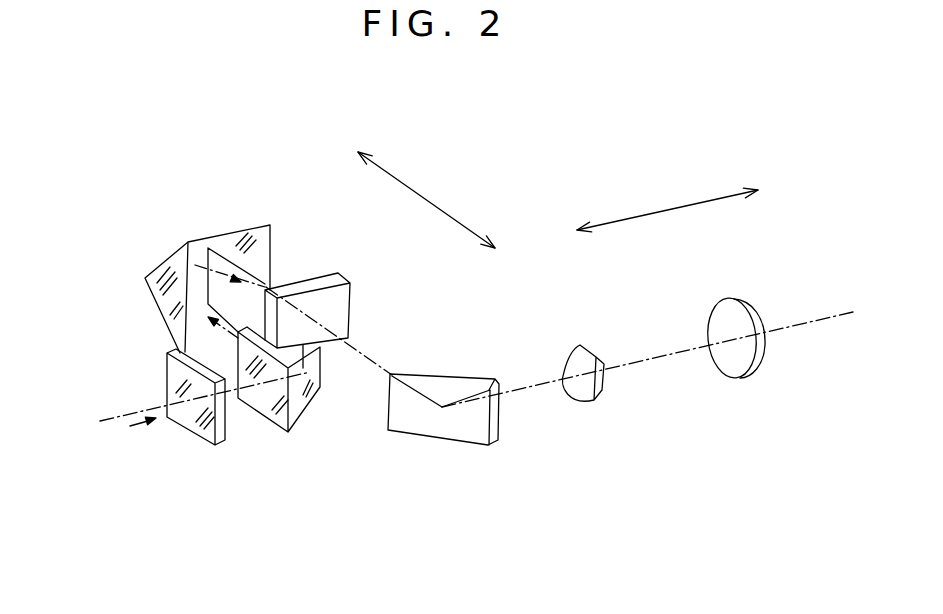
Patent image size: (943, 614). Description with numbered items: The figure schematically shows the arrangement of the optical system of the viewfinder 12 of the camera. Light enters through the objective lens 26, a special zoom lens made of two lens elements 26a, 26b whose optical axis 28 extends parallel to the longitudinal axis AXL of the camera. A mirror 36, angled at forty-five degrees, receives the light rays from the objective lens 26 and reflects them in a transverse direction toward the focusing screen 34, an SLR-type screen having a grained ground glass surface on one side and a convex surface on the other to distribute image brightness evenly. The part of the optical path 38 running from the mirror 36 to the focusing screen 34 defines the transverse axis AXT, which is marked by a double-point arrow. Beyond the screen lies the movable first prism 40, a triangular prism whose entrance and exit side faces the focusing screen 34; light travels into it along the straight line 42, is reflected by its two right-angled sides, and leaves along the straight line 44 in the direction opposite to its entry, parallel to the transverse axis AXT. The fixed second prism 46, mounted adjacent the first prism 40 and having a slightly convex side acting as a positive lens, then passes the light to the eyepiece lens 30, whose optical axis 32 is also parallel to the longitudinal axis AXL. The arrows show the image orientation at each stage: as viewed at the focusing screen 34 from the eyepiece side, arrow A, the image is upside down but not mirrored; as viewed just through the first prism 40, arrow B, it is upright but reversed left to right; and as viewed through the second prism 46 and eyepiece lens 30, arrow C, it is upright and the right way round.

The viewfinder 12 is at (322, 521).
The objective lens 26 is at (681, 370).
The lens element 26a is at (745, 378).
The lens element 26b is at (598, 401).
The optical axis 28 is at (828, 314).
The eyepiece lens 30 is at (198, 434).
The optical axis 32 is at (116, 417).
The focusing screen 34 is at (320, 282).
The mirror 36 is at (468, 433).
The optical path 38 is at (375, 358).
The first prism 40 is at (170, 262).
The straight line 42 is at (243, 262).
The straight line 44 is at (235, 310).
The second prism 46 is at (309, 390).
The arrow A is at (236, 274).
The arrow B is at (222, 328).
The arrow C is at (138, 430).
The transverse axis AXT is at (436, 203).
The longitudinal axis AXL is at (655, 212).